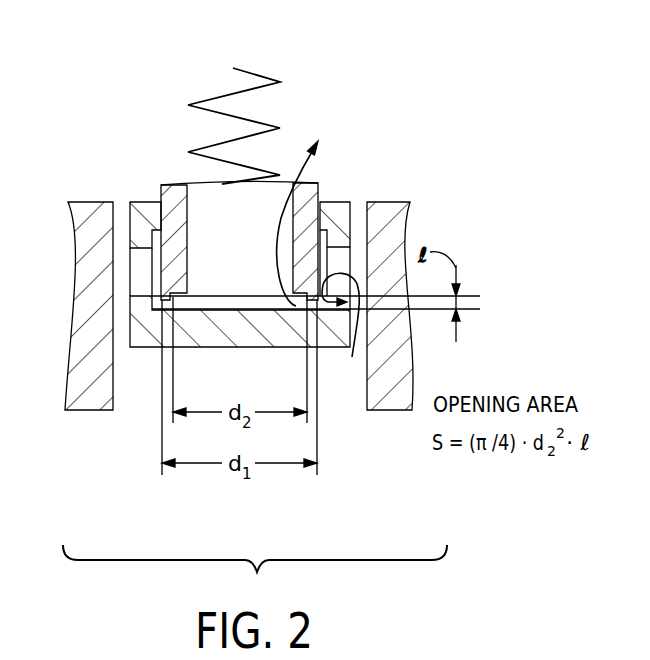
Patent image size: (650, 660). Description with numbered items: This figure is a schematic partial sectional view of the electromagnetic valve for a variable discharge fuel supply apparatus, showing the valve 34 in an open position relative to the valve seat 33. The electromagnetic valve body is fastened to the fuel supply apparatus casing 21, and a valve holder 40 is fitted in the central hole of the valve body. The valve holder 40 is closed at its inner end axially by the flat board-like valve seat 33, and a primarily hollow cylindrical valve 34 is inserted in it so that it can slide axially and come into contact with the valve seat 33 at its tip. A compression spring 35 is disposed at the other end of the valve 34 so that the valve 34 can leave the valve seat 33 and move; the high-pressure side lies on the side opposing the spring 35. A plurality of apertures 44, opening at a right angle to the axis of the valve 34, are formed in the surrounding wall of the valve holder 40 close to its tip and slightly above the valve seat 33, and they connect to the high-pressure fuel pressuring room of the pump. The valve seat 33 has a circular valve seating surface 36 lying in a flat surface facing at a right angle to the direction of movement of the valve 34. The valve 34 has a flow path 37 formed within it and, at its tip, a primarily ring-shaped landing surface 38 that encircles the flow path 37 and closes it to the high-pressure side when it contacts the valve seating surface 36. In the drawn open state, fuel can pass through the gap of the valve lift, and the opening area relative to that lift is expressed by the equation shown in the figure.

The fuel supply apparatus casing 21 is at (393, 207).
The valve seat 33 is at (140, 327).
The valve 34 is at (163, 190).
The compression spring 35 is at (267, 72).
The valve seating surface 36 is at (193, 307).
The flow path 37 is at (200, 192).
The landing surface 38 is at (160, 296).
The valve holder 40 is at (333, 205).
The apertures 44 is at (138, 268).